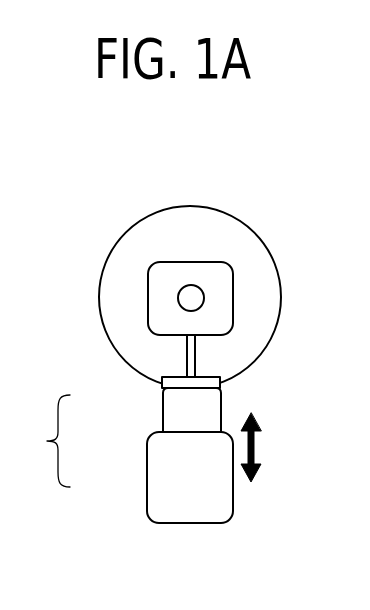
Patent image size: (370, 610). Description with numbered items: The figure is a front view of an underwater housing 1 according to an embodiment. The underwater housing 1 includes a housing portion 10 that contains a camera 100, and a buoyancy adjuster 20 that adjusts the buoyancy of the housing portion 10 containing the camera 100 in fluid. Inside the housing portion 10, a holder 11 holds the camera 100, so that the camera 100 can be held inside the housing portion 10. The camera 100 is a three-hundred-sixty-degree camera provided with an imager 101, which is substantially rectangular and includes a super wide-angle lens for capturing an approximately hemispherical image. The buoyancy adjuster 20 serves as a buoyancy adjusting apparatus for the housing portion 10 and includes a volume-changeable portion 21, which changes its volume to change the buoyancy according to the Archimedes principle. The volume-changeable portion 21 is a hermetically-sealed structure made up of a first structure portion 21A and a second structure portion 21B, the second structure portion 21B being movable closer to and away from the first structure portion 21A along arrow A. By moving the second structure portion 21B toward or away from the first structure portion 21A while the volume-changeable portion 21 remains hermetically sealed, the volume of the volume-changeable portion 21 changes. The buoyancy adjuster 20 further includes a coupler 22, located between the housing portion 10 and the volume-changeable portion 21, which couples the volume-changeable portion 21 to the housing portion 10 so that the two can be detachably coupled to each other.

The underwater housing 1 is at (258, 207).
The housing portion 10 is at (100, 276).
The camera 100 is at (168, 262).
The imager 101 is at (189, 285).
The holder 11 is at (187, 354).
The coupler 22 is at (220, 378).
The buoyancy adjuster 20 is at (125, 503).
The volume-changeable portion 21 is at (47, 441).
The first structure portion 21A is at (162, 412).
The second structure portion 21B is at (147, 464).
The arrow A is at (260, 447).